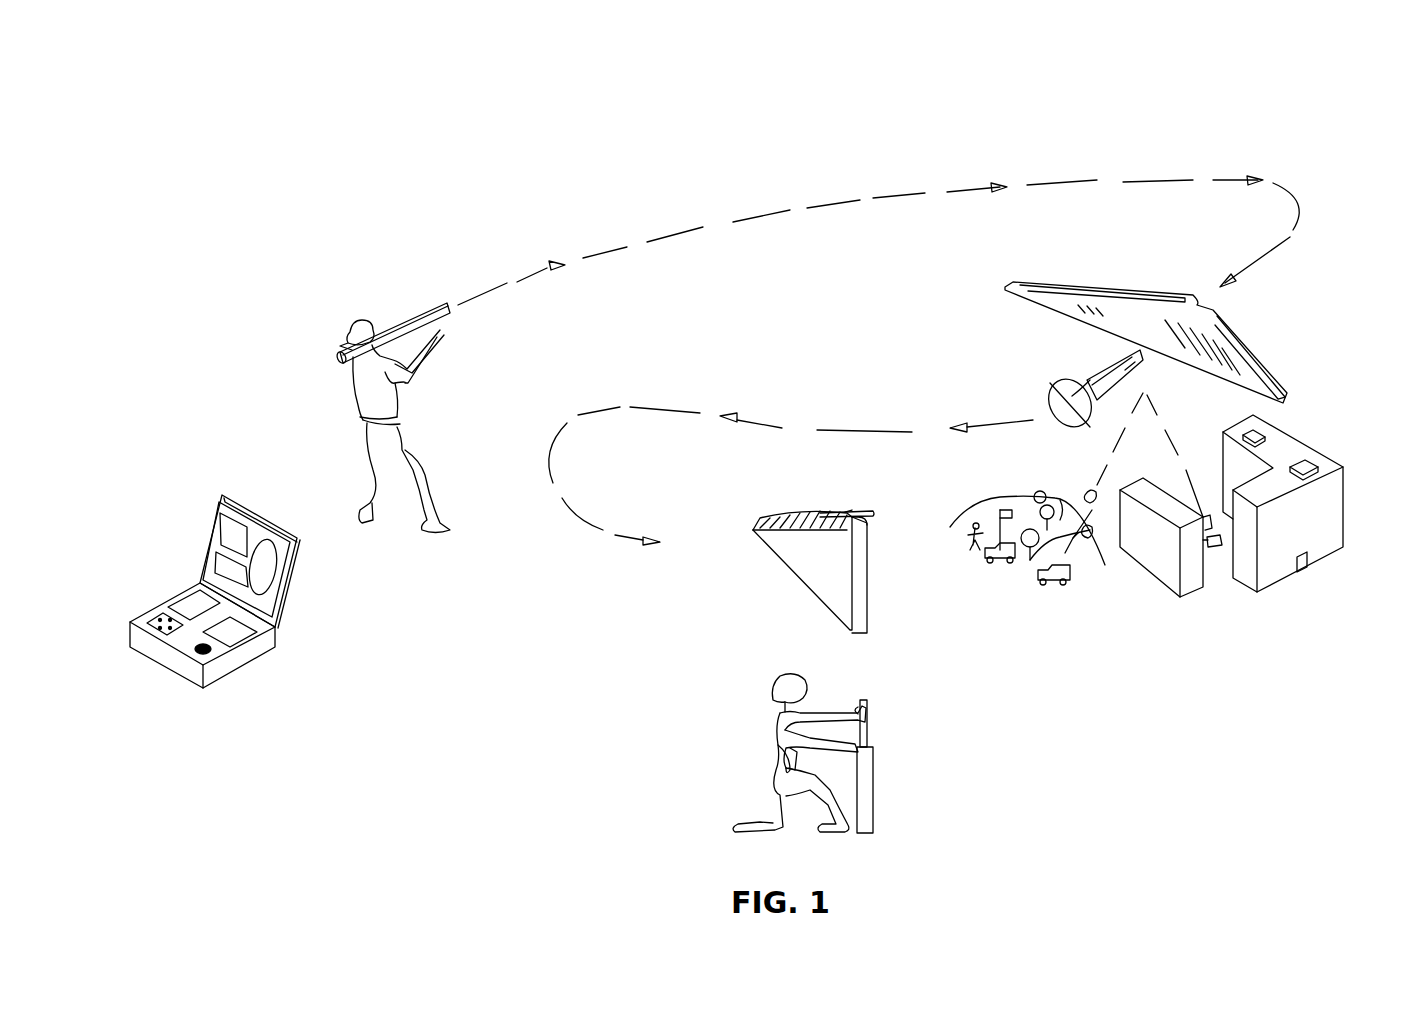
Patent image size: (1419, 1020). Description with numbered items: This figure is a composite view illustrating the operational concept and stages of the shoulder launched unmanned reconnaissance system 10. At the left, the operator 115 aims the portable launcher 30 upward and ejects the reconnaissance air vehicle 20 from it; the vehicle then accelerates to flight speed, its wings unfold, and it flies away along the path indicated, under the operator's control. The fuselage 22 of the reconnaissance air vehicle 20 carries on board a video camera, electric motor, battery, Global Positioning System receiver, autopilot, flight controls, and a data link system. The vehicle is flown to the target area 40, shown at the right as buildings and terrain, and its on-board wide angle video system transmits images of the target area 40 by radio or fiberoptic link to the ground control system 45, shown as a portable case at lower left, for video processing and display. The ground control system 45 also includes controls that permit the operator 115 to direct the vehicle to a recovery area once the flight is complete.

The shoulder launched unmanned reconnaissance system 10 is at (871, 152).
The reconnaissance air vehicle 20 is at (1283, 350).
The fuselage 22 is at (1117, 357).
The portable launcher 30 is at (408, 293).
The target area 40 is at (1210, 640).
The ground control system 45 is at (332, 608).
The operator 115 is at (360, 397).